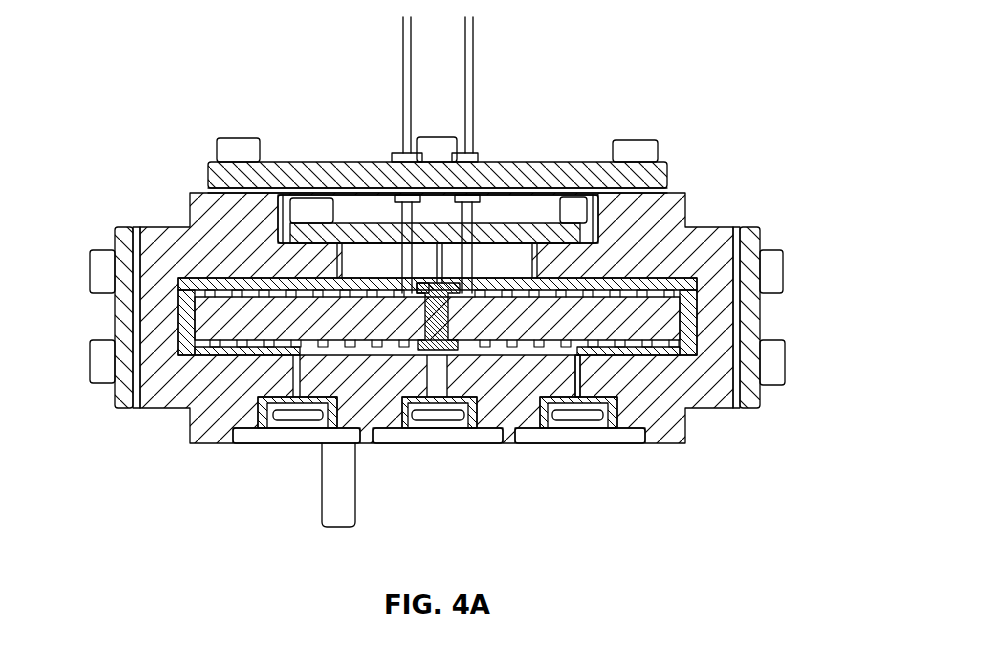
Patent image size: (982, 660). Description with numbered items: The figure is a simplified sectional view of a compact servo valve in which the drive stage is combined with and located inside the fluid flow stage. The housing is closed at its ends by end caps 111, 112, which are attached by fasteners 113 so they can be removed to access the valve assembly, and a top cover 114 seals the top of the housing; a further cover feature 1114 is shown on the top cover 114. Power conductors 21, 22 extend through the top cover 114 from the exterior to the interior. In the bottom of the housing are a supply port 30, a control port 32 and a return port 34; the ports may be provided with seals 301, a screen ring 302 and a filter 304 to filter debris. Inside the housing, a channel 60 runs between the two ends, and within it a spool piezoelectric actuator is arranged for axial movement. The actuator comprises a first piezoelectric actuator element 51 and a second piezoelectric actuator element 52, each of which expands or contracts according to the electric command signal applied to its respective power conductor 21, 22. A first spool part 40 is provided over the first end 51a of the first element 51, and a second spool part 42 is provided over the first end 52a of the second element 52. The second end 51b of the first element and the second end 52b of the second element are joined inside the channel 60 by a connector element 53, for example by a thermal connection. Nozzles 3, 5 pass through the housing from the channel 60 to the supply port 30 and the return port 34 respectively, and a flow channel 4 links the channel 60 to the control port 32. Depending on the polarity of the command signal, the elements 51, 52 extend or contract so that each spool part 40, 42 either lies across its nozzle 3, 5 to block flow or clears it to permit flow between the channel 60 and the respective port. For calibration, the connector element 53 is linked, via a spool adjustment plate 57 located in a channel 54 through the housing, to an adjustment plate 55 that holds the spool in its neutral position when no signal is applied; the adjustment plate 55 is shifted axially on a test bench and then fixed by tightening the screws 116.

The nozzle 3 is at (340, 422).
The flow channel 4 is at (480, 400).
The nozzle 5 is at (615, 430).
The power conductor 21 is at (403, 48).
The power conductor 22 is at (473, 47).
The supply port 30 is at (310, 414).
The control port 32 is at (437, 415).
The return port 34 is at (587, 385).
The first spool part 40 is at (193, 275).
The second spool part 42 is at (712, 295).
The first piezoelectric actuator element 51 is at (136, 290).
The first end of the first piezoelectric actuator element 51a is at (200, 322).
The second end of the first piezoelectric actuator element 51b is at (240, 405).
The second piezoelectric actuator element 52 is at (688, 280).
The first end of the second piezoelectric actuator element 52a is at (697, 323).
The second end of the second piezoelectric actuator element 52b is at (520, 350).
The connector element 53 is at (455, 292).
The channel 54 is at (292, 198).
The adjustment plate 55 is at (415, 281).
The spool adjustment plate 57 is at (437, 290).
The channel 60 is at (360, 347).
The end cap 111 is at (125, 242).
The end cap 112 is at (752, 240).
The fastener 113 is at (770, 282).
The top cover 114 is at (568, 185).
The screw 116 is at (317, 221).
The seal 301 is at (645, 435).
The screen ring 302 is at (640, 410).
The filter 304 is at (270, 410).
The top cap 1114 is at (627, 155).